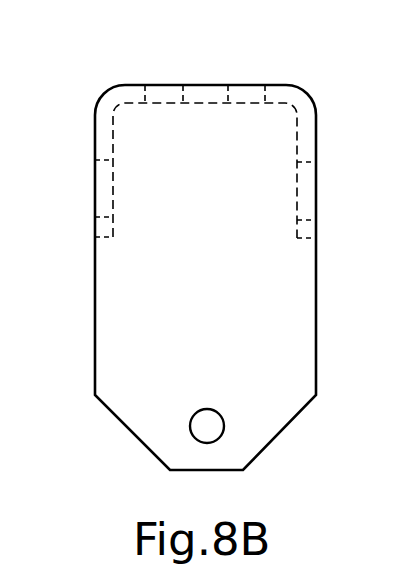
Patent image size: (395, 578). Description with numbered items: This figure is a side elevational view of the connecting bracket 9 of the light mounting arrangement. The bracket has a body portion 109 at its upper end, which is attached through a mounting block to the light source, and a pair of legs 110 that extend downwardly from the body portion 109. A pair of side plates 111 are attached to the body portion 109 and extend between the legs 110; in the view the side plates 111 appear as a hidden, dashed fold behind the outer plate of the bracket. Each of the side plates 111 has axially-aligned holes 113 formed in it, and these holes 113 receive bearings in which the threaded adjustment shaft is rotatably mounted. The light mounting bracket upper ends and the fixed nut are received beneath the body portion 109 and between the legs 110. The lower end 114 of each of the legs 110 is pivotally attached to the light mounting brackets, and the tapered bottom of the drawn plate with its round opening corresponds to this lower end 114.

The buckle housing assembly 9 is at (322, 253).
The body portion 109 is at (203, 85).
The legs 110 is at (394, 281).
The side plates 111 is at (100, 123).
The holes 113 is at (97, 186).
The lower end 114 is at (270, 420).